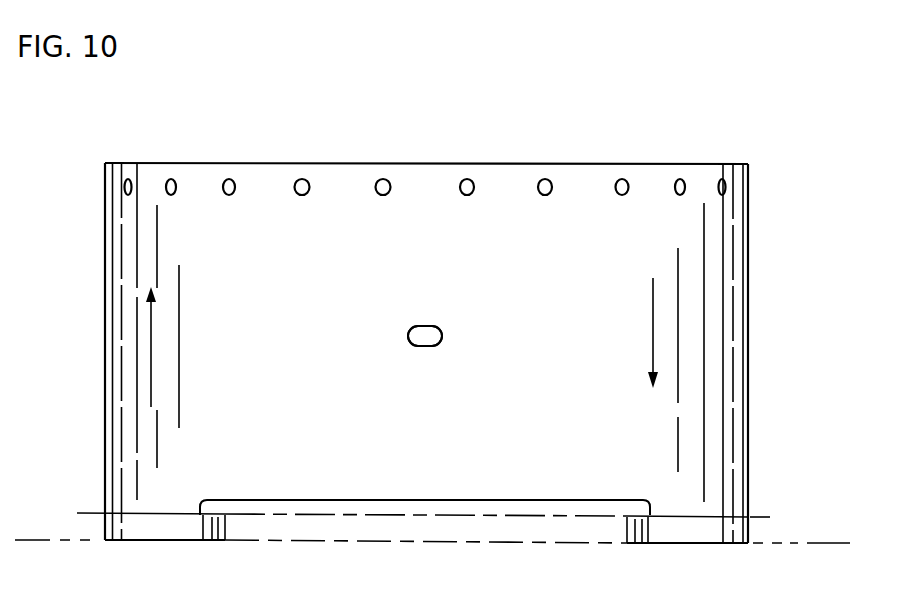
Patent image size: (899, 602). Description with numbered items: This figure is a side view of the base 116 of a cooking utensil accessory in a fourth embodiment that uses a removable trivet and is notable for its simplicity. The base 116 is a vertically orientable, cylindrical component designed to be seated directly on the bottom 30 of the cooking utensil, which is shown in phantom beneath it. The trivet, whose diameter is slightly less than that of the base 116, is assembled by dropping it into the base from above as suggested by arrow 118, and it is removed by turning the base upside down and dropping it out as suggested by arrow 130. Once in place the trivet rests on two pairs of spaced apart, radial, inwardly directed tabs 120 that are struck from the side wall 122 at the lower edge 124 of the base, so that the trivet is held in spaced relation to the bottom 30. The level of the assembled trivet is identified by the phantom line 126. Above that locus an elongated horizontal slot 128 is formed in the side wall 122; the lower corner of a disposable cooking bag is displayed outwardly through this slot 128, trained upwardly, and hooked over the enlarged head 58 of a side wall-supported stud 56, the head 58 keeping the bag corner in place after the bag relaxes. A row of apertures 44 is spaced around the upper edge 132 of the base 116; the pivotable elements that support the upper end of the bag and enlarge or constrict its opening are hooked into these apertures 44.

The bottom of utensil 30 is at (88, 540).
The apertures 44 is at (383, 195).
The stud 56 is at (421, 312).
The enlarged head 58 is at (430, 345).
The base 116 is at (316, 130).
The arrow 118 is at (653, 358).
The tabs 120 is at (225, 530).
The side wall 122 is at (265, 379).
The lower edge 124 is at (673, 544).
The phantom line 126 is at (753, 517).
The slot 128 is at (437, 502).
The arrow 130 is at (152, 375).
The upper edge 132 is at (477, 164).